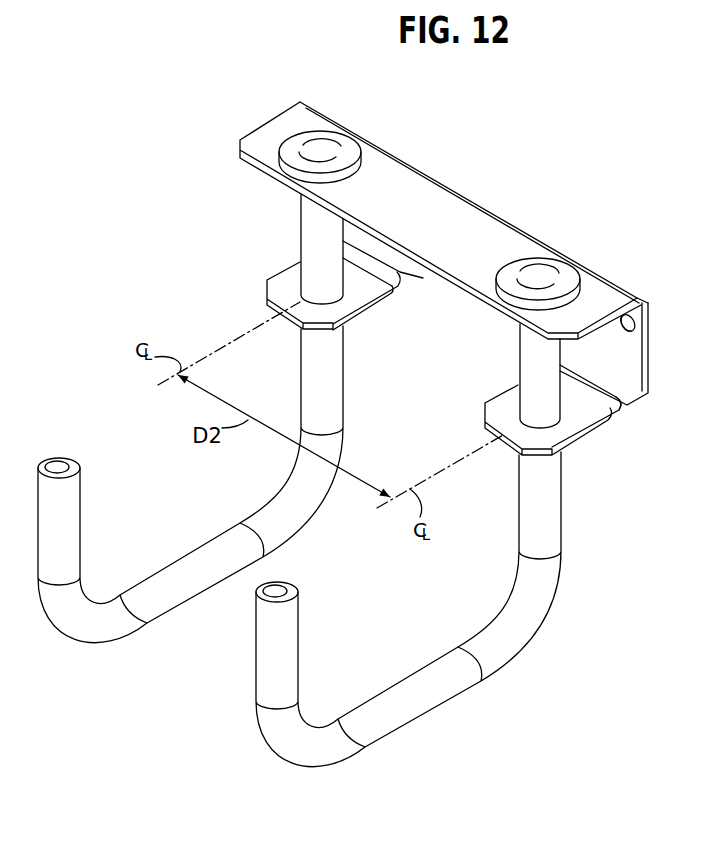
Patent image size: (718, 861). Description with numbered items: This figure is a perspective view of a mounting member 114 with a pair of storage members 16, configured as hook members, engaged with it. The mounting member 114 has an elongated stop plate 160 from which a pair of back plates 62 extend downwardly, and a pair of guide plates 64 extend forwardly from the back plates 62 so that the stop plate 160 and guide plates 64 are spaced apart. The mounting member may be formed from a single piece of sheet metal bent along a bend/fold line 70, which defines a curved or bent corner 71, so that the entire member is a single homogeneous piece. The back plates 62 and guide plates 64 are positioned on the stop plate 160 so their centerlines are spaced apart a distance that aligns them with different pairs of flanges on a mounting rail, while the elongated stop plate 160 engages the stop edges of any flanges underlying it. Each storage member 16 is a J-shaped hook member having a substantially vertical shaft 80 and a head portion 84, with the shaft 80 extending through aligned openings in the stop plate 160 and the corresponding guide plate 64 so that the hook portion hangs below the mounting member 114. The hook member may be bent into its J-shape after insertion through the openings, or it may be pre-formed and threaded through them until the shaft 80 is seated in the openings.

The storage member 16 is at (110, 652).
The back plate 62 is at (412, 272).
The guide plate 64 is at (352, 302).
The bend/fold line 70 is at (619, 405).
The curved or bent corner 71 is at (425, 173).
The shaft 80 is at (300, 246).
The head portion 84 is at (323, 146).
The mounting member 114 is at (594, 186).
The elongated stop plate 160 is at (474, 222).